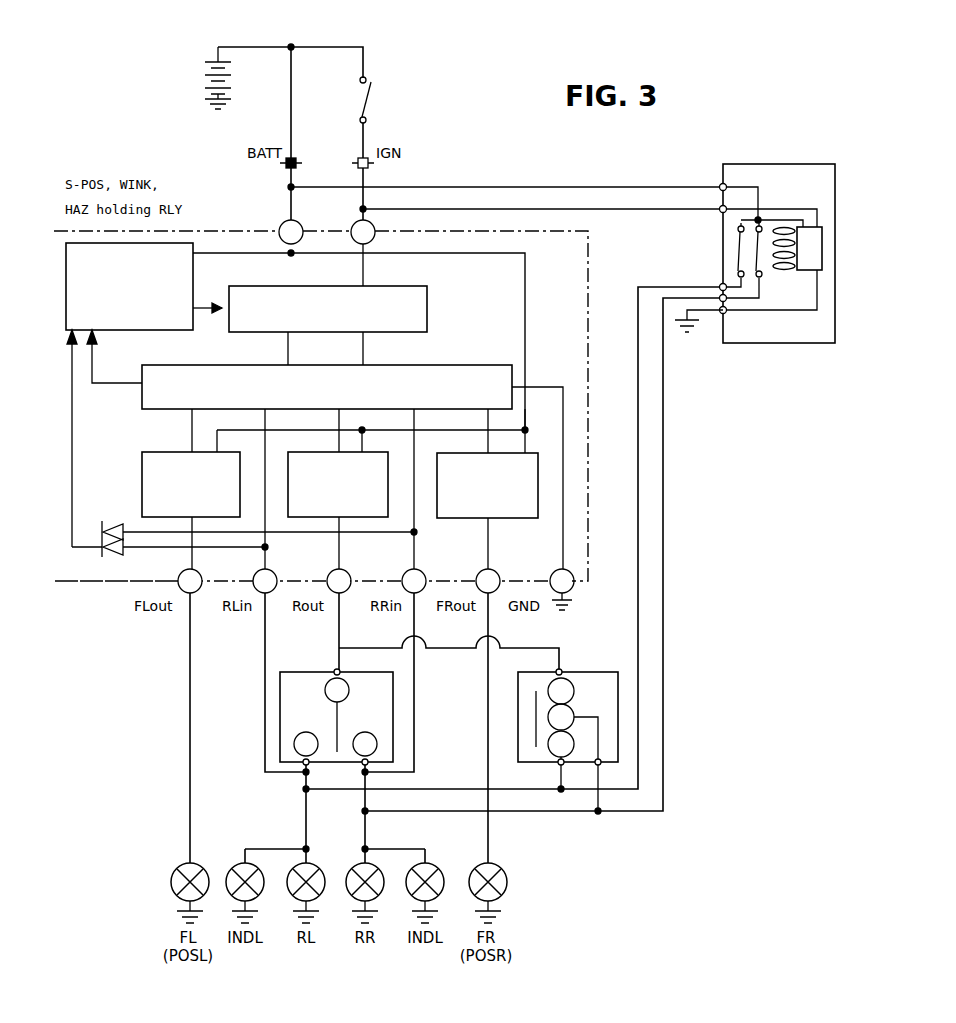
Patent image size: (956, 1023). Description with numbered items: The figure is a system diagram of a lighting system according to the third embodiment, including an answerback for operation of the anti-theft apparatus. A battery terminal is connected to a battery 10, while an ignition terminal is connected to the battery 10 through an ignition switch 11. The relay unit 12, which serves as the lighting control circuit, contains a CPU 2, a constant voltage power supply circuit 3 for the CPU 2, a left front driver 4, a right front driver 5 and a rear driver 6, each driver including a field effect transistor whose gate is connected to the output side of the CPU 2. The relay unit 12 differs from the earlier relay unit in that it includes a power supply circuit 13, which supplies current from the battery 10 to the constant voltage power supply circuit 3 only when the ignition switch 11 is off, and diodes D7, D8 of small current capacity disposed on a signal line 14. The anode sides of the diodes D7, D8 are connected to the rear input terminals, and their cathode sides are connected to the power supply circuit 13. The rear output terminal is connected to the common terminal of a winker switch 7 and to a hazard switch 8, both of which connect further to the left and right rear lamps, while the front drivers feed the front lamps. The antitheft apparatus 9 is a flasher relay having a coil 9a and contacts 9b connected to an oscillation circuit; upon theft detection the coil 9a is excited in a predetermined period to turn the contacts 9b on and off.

The CPU 2 is at (420, 365).
The constant voltage power supply circuit 3 is at (402, 286).
The left front driver 4 is at (169, 452).
The right front driver 5 is at (495, 518).
The rear driver 6 is at (312, 452).
The winker switch 7 is at (310, 672).
The hazard switch 8 is at (584, 672).
The antitheft apparatus 9 is at (780, 294).
The coil 9a is at (822, 263).
The contact 9b is at (763, 273).
The battery 10 is at (208, 78).
The ignition switch 11 is at (376, 98).
The relay unit 12 is at (124, 583).
The power supply circuit 13 is at (160, 330).
The signal line 14 is at (72, 395).
The diode D7 is at (117, 526).
The diode D8 is at (116, 557).